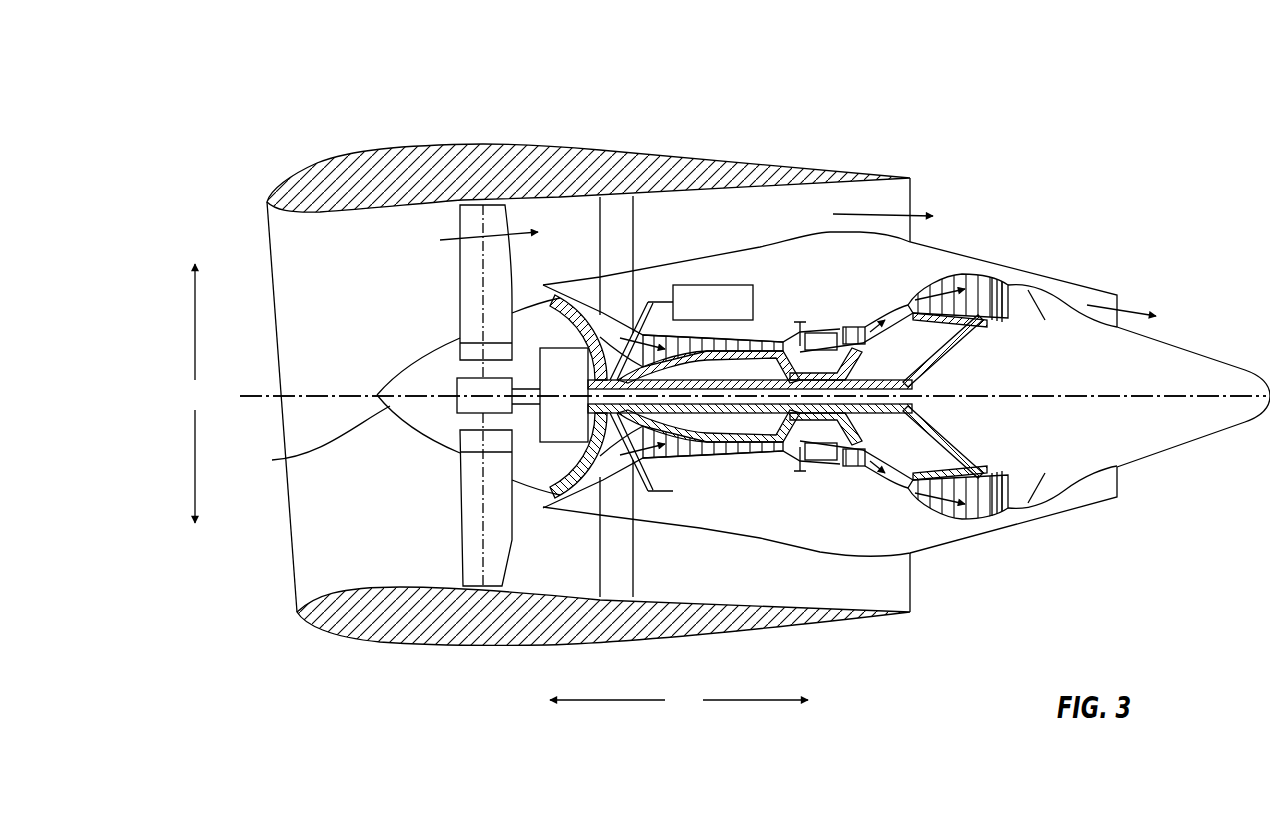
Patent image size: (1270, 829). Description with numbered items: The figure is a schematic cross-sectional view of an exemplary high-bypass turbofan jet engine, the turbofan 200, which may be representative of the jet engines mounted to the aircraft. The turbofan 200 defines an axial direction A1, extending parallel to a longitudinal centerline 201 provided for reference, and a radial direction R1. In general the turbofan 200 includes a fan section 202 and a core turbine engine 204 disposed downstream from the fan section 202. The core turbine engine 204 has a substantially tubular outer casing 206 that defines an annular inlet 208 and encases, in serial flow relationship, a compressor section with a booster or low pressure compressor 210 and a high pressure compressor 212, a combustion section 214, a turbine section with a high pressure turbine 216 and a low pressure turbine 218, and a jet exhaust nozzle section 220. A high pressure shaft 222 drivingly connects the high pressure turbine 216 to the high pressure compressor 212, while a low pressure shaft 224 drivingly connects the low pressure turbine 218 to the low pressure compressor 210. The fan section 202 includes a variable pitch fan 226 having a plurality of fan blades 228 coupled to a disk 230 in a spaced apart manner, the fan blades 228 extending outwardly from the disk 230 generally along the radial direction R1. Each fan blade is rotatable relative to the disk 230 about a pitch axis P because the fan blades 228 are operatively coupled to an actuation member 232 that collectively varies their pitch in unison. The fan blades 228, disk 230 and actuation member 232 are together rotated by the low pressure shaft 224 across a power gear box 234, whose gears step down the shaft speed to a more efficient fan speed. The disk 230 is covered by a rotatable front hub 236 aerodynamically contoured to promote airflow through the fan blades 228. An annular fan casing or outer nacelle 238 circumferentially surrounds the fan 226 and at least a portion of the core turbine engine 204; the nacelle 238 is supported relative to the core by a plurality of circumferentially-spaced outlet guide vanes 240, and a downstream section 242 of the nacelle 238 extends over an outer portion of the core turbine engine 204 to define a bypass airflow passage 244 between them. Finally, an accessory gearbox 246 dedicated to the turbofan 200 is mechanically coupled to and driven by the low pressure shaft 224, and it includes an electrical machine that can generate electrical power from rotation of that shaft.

The turbofan 200 is at (1042, 160).
The longitudinal centerline 201 is at (1063, 394).
The fan section 202 is at (420, 225).
The core turbine engine 204 is at (760, 266).
The outer casing 206 is at (782, 545).
The annular inlet 208 is at (545, 496).
The low pressure compressor 210 is at (584, 510).
The high pressure compressor 212 is at (661, 449).
The combustion section 214 is at (805, 470).
The high pressure turbine 216 is at (933, 460).
The low pressure turbine 218 is at (986, 516).
The jet exhaust nozzle section 220 is at (1040, 497).
The high pressure shaft 222 is at (818, 372).
The low pressure shaft 224 is at (893, 378).
The variable pitch fan 226 is at (424, 448).
The fan blades 228 is at (460, 534).
The disk 230 is at (475, 352).
The actuation member 232 is at (457, 382).
The power gear box 234 is at (556, 364).
The front hub 236 is at (311, 441).
The outer nacelle 238 is at (500, 645).
The outlet guide vanes 240 is at (634, 226).
The downstream section 242 is at (843, 166).
The bypass airflow passage 244 is at (807, 228).
The accessory gearbox 246 is at (755, 300).
The pitch axis P is at (483, 218).
The radial direction R1 is at (200, 393).
The axial direction A1 is at (679, 700).